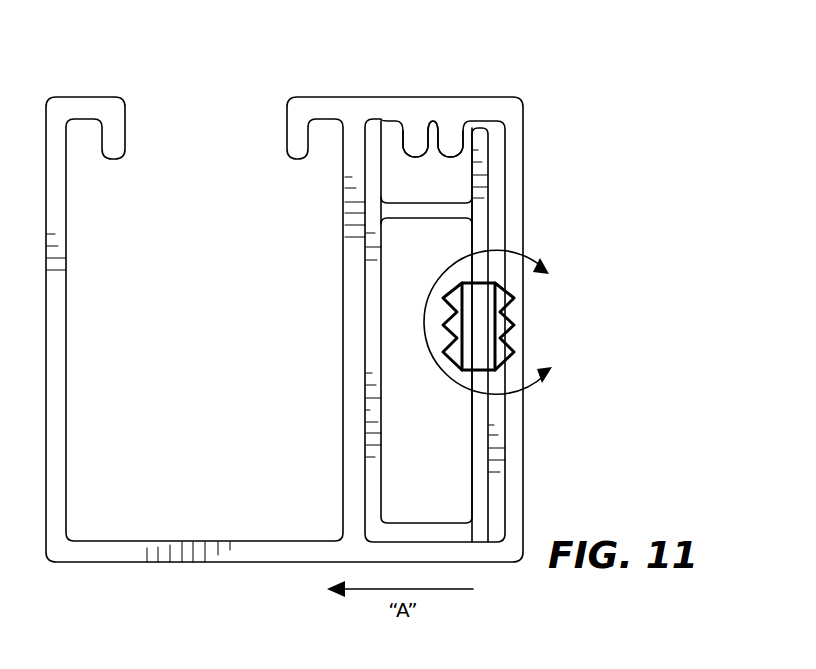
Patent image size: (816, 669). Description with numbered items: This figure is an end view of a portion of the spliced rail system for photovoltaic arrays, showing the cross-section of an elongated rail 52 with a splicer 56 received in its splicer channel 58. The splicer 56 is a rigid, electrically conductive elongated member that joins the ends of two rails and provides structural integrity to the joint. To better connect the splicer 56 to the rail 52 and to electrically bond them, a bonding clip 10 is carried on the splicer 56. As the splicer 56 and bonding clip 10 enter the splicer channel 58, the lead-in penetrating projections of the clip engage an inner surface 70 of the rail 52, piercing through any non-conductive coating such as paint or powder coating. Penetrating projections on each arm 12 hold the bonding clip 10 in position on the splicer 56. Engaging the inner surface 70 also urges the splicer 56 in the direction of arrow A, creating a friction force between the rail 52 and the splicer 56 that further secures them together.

The bonding clip 10 is at (465, 332).
The arm 12 is at (497, 322).
The elongated rail 52 is at (523, 176).
The splicer 56 is at (363, 350).
The splicer channel 58 is at (390, 144).
The inner surface 70 is at (503, 482).